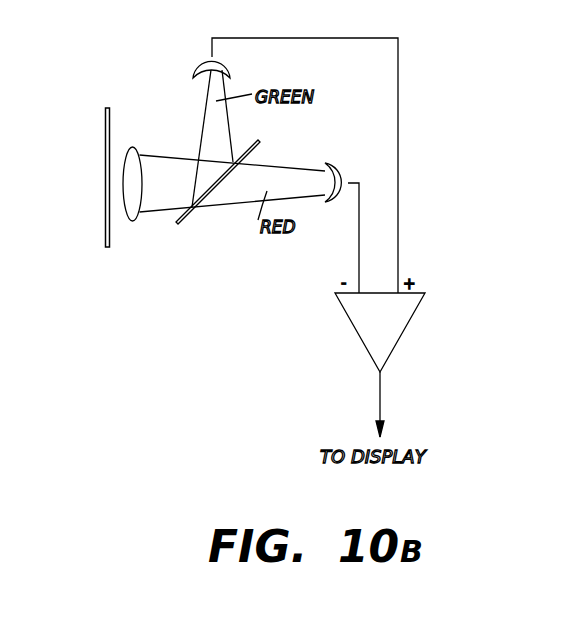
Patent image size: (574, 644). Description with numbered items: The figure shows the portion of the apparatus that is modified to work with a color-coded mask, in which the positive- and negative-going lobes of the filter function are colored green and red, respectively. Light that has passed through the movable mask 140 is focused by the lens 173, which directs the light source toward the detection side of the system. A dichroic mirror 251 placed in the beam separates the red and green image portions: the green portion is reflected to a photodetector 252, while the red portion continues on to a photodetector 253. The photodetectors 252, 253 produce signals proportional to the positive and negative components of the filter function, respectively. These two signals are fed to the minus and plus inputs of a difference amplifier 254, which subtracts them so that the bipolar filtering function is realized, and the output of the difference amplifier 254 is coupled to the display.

The movable mask 140 is at (105, 119).
The lens 173 is at (130, 147).
The dichroic mirror 251 is at (185, 223).
The photodetector 252 is at (197, 63).
The photodetector 253 is at (331, 162).
The difference amplifier 254 is at (355, 332).